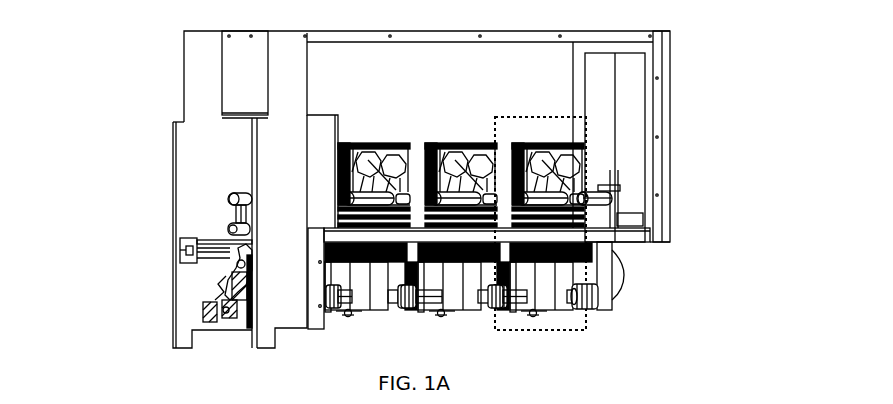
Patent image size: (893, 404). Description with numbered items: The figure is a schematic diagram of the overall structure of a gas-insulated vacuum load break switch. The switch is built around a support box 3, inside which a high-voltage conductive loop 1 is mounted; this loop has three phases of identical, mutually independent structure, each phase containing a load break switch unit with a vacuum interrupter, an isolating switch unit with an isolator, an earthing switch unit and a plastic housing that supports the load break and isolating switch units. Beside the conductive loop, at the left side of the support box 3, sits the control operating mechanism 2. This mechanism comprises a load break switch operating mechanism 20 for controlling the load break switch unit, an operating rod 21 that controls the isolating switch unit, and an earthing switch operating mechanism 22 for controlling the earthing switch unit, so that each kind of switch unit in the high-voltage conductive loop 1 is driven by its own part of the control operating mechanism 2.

The high-voltage conductive loop 1 is at (587, 318).
The control operating mechanism 2 is at (214, 273).
The support box 3 is at (285, 117).
The load break switch operating mechanism 20 is at (222, 226).
The operating rod 21 is at (234, 195).
The earthing switch operating mechanism 22 is at (177, 243).